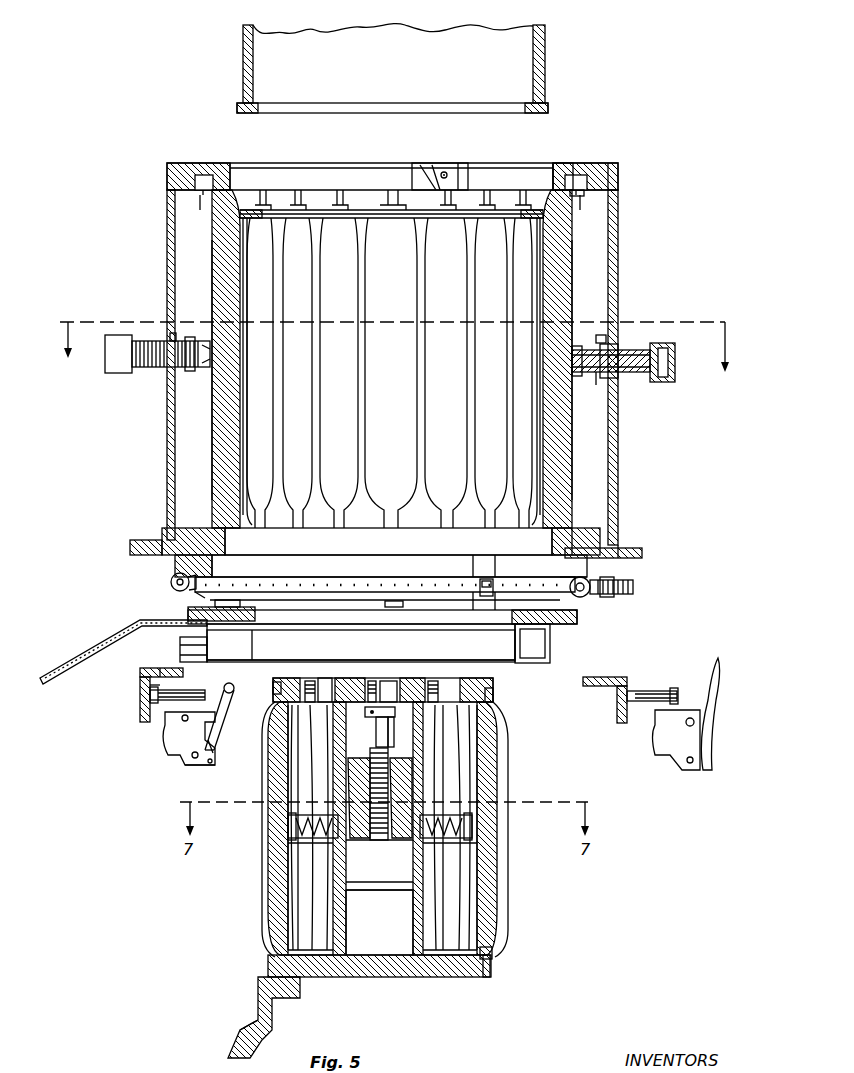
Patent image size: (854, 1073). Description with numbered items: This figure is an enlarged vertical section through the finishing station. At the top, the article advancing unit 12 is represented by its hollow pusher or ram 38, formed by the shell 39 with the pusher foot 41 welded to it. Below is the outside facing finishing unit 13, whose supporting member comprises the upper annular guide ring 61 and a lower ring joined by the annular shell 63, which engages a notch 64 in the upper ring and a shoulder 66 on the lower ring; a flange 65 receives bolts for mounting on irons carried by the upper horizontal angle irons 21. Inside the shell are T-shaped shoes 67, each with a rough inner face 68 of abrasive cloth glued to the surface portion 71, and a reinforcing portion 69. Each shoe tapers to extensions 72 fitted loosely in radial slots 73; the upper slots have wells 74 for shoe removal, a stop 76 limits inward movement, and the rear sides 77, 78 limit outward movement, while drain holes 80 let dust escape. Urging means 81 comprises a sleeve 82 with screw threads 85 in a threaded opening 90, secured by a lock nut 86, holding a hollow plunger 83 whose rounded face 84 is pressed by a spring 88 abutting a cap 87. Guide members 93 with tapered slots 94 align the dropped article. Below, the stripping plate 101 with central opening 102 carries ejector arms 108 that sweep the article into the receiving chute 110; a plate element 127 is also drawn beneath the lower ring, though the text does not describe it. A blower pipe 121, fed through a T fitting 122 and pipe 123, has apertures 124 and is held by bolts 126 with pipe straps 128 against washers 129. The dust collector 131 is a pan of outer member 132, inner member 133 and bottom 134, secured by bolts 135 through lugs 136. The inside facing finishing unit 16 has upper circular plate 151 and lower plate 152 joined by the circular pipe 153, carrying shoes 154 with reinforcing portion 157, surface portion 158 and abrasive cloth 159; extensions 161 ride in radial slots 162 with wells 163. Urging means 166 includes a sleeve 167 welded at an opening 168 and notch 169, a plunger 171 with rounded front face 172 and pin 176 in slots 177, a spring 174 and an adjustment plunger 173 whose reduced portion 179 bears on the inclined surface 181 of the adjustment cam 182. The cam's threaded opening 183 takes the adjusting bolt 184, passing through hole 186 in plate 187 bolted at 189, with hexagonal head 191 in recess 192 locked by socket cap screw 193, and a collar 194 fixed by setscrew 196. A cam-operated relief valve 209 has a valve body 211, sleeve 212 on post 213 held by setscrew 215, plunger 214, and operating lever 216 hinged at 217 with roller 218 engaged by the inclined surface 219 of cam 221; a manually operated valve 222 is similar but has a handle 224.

The article advancing unit 12 is at (549, 105).
The hollow pusher or ram 38 is at (244, 68).
The shell 39 is at (546, 64).
The pusher foot 41 is at (548, 110).
The outside facing finishing unit 13 is at (620, 302).
The upper annular guide ring 61 is at (566, 172).
The annular shell 63 is at (619, 235).
The notch 64 is at (619, 178).
The flange 65 is at (642, 545).
The shoulder 66 is at (578, 522).
The shoe 67 is at (572, 286).
The rough inner face 68 is at (540, 297).
The reinforcing portion 69 is at (566, 300).
The surface portion 71 is at (543, 266).
The extension 72 is at (235, 210).
The radial slot 73 is at (212, 215).
The well 74 is at (600, 172).
The stop 76 is at (552, 544).
The rear side of well 77 is at (585, 192).
The rear side of slot 78 is at (580, 562).
The drain hole 80 is at (556, 566).
The shoe urging means 81 is at (107, 346).
The sleeve 82 is at (620, 380).
The hollow plunger 83 is at (596, 374).
The rounded face 84 is at (588, 376).
The screw threads 85 is at (612, 346).
The lock nut 86 is at (160, 375).
The cap 87 is at (116, 373).
The spring 88 is at (652, 378).
The threaded opening 90 is at (172, 328).
The guide member 93 is at (453, 168).
The tapered slot 94 is at (447, 170).
The stripping plate 101 is at (578, 614).
The central opening 102 is at (496, 599).
The ejector arm 108 is at (398, 604).
The receiving chute 110 is at (112, 640).
The blower pipe 121 is at (352, 577).
The T fitting 122 is at (605, 596).
The pipe 123 is at (632, 582).
The aperture 124 is at (292, 584).
The bolt 126 is at (204, 590).
The bottom plate 127 is at (226, 543).
The pipe strap 128 is at (172, 587).
The thick sleeve or washer 129 is at (175, 561).
The dust collector 131 is at (545, 652).
The outer circular member 132 is at (552, 657).
The inner circular member 133 is at (253, 647).
The bottom 134 is at (500, 662).
The bolt 135 is at (182, 636).
The apertured lug 136 is at (235, 618).
The upper circular plate 151 is at (445, 684).
The lower circular plate or base 152 is at (318, 978).
The circular pipe or shell 153 is at (415, 926).
The shoe 154 is at (260, 900).
The reinforcing portion 157 is at (500, 940).
The surface portion 158 is at (498, 866).
The abrasive cloth 159 is at (500, 898).
The extension 161 is at (496, 708).
The radial slot 162 is at (276, 692).
The well 163 is at (494, 684).
The shoe urging means 166 is at (266, 918).
The sleeve 167 is at (340, 778).
The opening 168 is at (412, 852).
The notch 169 is at (445, 800).
The plunger 171 is at (320, 836).
The rounded front face 172 is at (322, 818).
The adjustment plunger 173 is at (412, 886).
The spring 174 is at (445, 826).
The pin 176 is at (290, 866).
The slot 177 is at (280, 868).
The reduced portion 179 is at (398, 853).
The inclined surface 181 is at (379, 861).
The adjustment cam 182 is at (455, 770).
The threaded opening 183 is at (380, 764).
The adjusting bolt 184 is at (386, 768).
The hole 186 is at (372, 712).
The plate 187 is at (412, 682).
The bolt 189 is at (334, 678).
The hexagonal head 191 is at (392, 652).
The recess 192 is at (412, 671).
The socket cap screw 193 is at (373, 678).
The collar 194 is at (389, 732).
The setscrew 196 is at (386, 748).
The cam-operated relief valve 209 is at (168, 745).
The valve body 211 is at (165, 742).
The sleeve 212 is at (190, 697).
The post 213 is at (162, 702).
The plunger 214 is at (215, 760).
The setscrew 215 is at (185, 672).
The operating lever 216 is at (220, 742).
The hinge 217 is at (205, 766).
The roller 218 is at (222, 702).
The inclined surface 219 is at (238, 1040).
The cam 221 is at (272, 1022).
The manually operated valve 222 is at (668, 748).
The handle 224 is at (714, 690).
The upper horizontal angle iron 21 is at (150, 666).
The inside facing finishing unit 16 is at (550, 896).